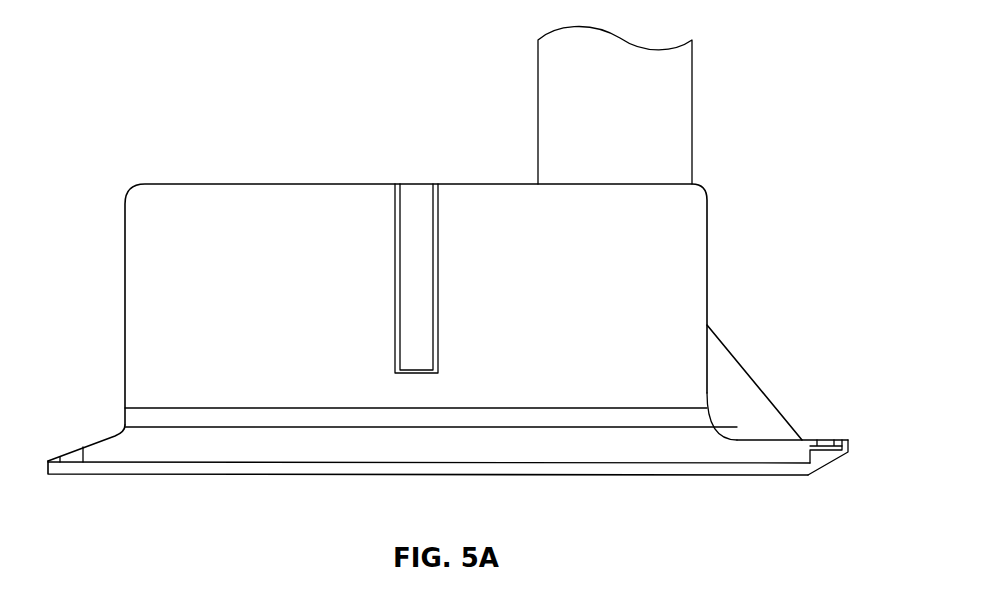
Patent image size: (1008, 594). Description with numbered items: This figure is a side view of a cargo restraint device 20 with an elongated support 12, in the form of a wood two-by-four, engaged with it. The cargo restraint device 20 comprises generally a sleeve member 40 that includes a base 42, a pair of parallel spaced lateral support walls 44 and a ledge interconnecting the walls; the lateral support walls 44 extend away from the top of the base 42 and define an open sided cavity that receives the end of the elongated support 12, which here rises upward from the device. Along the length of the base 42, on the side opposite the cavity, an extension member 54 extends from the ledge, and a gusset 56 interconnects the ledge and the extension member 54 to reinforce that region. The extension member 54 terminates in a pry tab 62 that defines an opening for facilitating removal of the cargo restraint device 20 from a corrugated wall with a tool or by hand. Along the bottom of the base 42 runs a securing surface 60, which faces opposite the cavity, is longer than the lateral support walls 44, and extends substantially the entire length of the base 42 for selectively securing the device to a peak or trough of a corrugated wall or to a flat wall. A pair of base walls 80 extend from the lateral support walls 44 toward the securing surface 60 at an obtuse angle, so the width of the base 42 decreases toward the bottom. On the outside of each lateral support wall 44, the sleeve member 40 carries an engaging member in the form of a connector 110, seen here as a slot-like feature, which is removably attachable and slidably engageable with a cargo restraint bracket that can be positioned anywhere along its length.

The elongated support 12 is at (672, 110).
The cargo restraint device 20 is at (206, 184).
The sleeve member 40 is at (685, 243).
The base 42 is at (738, 450).
The lateral support wall 44 is at (562, 312).
The extension member 54 is at (777, 455).
The gusset 56 is at (725, 387).
The securing surface 60 is at (252, 475).
The pry tab 62 is at (842, 445).
The base wall 80 is at (372, 450).
The connector 110 is at (418, 202).